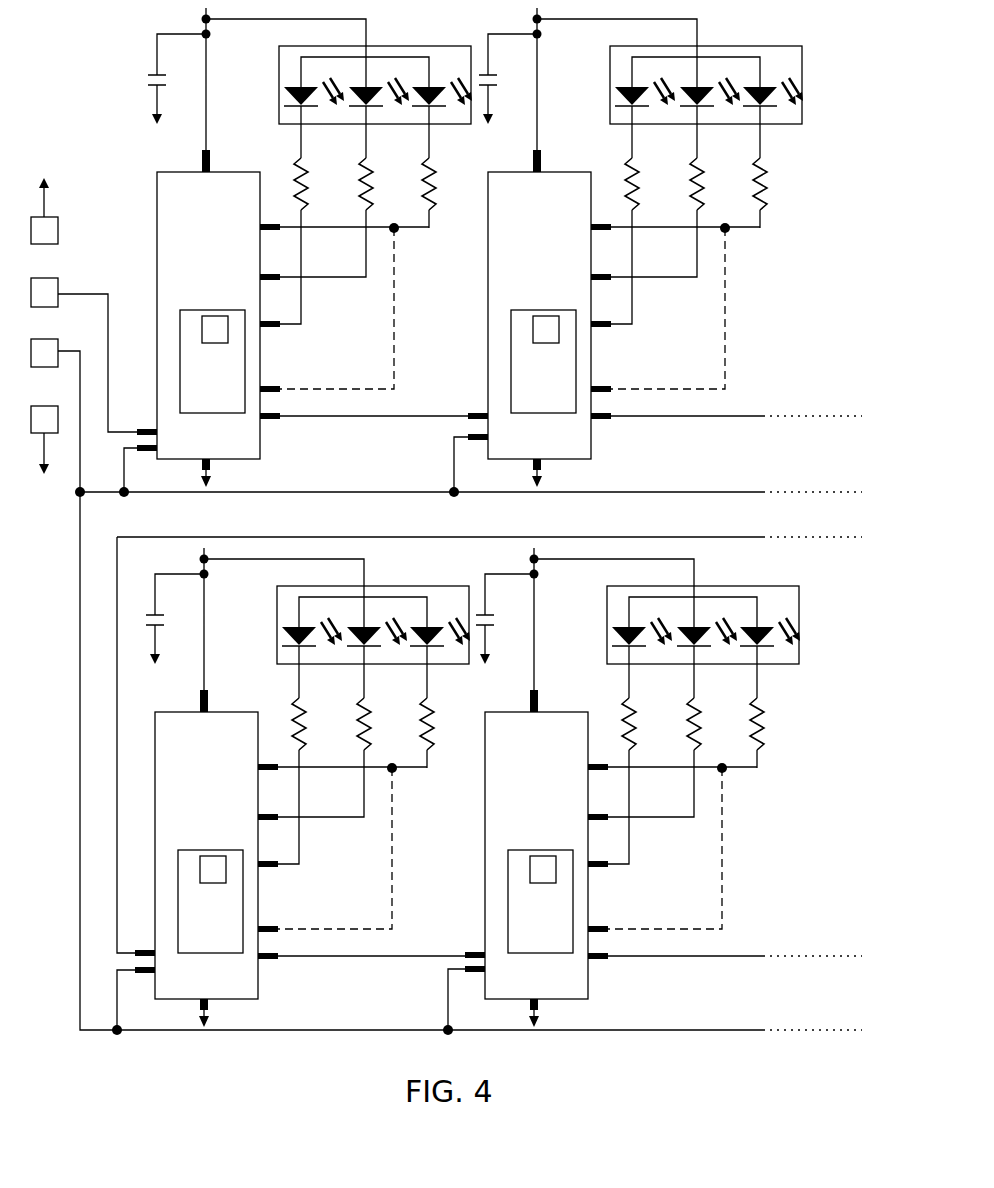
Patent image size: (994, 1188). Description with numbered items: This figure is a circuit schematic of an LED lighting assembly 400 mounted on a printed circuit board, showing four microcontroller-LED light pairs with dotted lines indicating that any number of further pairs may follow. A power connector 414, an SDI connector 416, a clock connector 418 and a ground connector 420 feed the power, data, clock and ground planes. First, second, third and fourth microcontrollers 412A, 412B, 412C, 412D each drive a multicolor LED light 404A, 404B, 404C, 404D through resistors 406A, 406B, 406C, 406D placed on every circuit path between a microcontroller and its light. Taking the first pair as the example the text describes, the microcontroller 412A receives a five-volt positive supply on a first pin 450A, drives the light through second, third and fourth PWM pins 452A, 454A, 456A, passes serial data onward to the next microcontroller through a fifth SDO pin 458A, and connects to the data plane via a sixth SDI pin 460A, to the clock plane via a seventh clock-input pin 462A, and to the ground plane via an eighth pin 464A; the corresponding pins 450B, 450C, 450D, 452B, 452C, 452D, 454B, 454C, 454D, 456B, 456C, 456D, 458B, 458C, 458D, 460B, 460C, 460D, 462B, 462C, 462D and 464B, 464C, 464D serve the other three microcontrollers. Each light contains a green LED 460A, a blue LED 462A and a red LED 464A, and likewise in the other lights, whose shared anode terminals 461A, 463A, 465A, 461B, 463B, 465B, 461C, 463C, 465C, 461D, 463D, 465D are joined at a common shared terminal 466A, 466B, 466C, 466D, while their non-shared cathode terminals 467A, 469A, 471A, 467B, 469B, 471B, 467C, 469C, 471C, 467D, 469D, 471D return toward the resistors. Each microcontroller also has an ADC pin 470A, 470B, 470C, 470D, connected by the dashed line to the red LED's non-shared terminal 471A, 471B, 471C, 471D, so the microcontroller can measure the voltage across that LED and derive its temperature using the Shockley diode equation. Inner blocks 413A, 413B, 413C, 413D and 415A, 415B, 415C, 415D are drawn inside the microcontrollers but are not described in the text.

The LED lighting assembly 400 is at (84, 74).
The multicolor LED light 404A is at (388, 46).
The multicolor LED light 404B is at (706, 67).
The multicolor LED light 404C is at (373, 607).
The multicolor LED light 404D is at (703, 607).
The resistor 406A is at (308, 196).
The resistor 406B is at (717, 182).
The resistor 406C is at (384, 722).
The resistor 406D is at (715, 722).
The first microcontroller 412A is at (157, 213).
The second microcontroller 412B is at (508, 315).
The third microcontroller 412C is at (188, 855).
The fourth microcontroller 412D is at (501, 855).
The memory 413A is at (218, 316).
The memory 413B is at (532, 317).
The memory 413C is at (199, 857).
The memory 413D is at (529, 857).
The power connector 414 is at (58, 233).
The processor 415A is at (198, 413).
The processor 415B is at (546, 375).
The processor 415C is at (213, 915).
The processor 415D is at (544, 915).
The SDI connector 416 is at (44, 278).
The clock connector 418 is at (44, 339).
The ground connector 420 is at (44, 406).
The first pin 450A is at (209, 150).
The first pin 450B is at (533, 79).
The first pin 450C is at (200, 619).
The first pin 450D is at (530, 619).
The second pin 452A is at (279, 222).
The second pin 452B is at (572, 181).
The second pin 452C is at (239, 721).
The second pin 452D is at (569, 721).
The third pin 454A is at (280, 230).
The third pin 454B is at (675, 229).
The third pin 454C is at (342, 769).
The third pin 454D is at (672, 769).
The fourth pin 456A is at (281, 325).
The fourth pin 456B is at (656, 280).
The fourth pin 456C is at (323, 820).
The fourth pin 456D is at (654, 820).
The fifth pin 458A is at (282, 418).
The fifth pin 458B is at (677, 445).
The fifth pin 458C is at (361, 985).
The fifth pin 458D is at (675, 985).
The green LED 460A is at (287, 93).
The green LED 460B is at (562, 242).
The green LED 460C is at (230, 781).
The green LED 460D is at (558, 782).
The shared terminal 461A is at (301, 62).
The shared terminal 461B is at (642, 57).
The shared terminal 461C is at (309, 597).
The shared terminal 461D is at (639, 597).
The blue LED 462A is at (356, 88).
The blue LED 462B is at (604, 271).
The blue LED 462C is at (271, 811).
The blue LED 462D is at (600, 811).
The shared terminal 463A is at (428, 80).
The shared terminal 463B is at (744, 78).
The shared terminal 463C is at (411, 618).
The shared terminal 463D is at (741, 618).
The red LED 464A is at (436, 92).
The red LED 464B is at (667, 274).
The red LED 464C is at (334, 814).
The red LED 464D is at (664, 814).
The shared terminal 465A is at (429, 58).
The shared terminal 465B is at (756, 48).
The shared terminal 465C is at (423, 588).
The shared terminal 465D is at (753, 588).
The shared terminal 466A is at (366, 38).
The shared terminal 466B is at (615, 51).
The shared terminal 466C is at (282, 591).
The shared terminal 466D is at (612, 591).
The non-shared terminal 467A is at (302, 112).
The non-shared terminal 467B is at (654, 132).
The non-shared terminal 467C is at (321, 672).
The non-shared terminal 467D is at (652, 672).
The non-shared terminal 469A is at (367, 112).
The non-shared terminal 469B is at (720, 132).
The non-shared terminal 469C is at (387, 672).
The non-shared terminal 469D is at (717, 672).
The ADC pin 470A is at (280, 389).
The ADC pin 470B is at (658, 310).
The ADC pin 470C is at (325, 850).
The ADC pin 470D is at (655, 850).
The non-shared terminal 471A is at (430, 112).
The non-shared terminal 471B is at (778, 132).
The non-shared terminal 471C is at (445, 672).
The non-shared terminal 471D is at (776, 672).